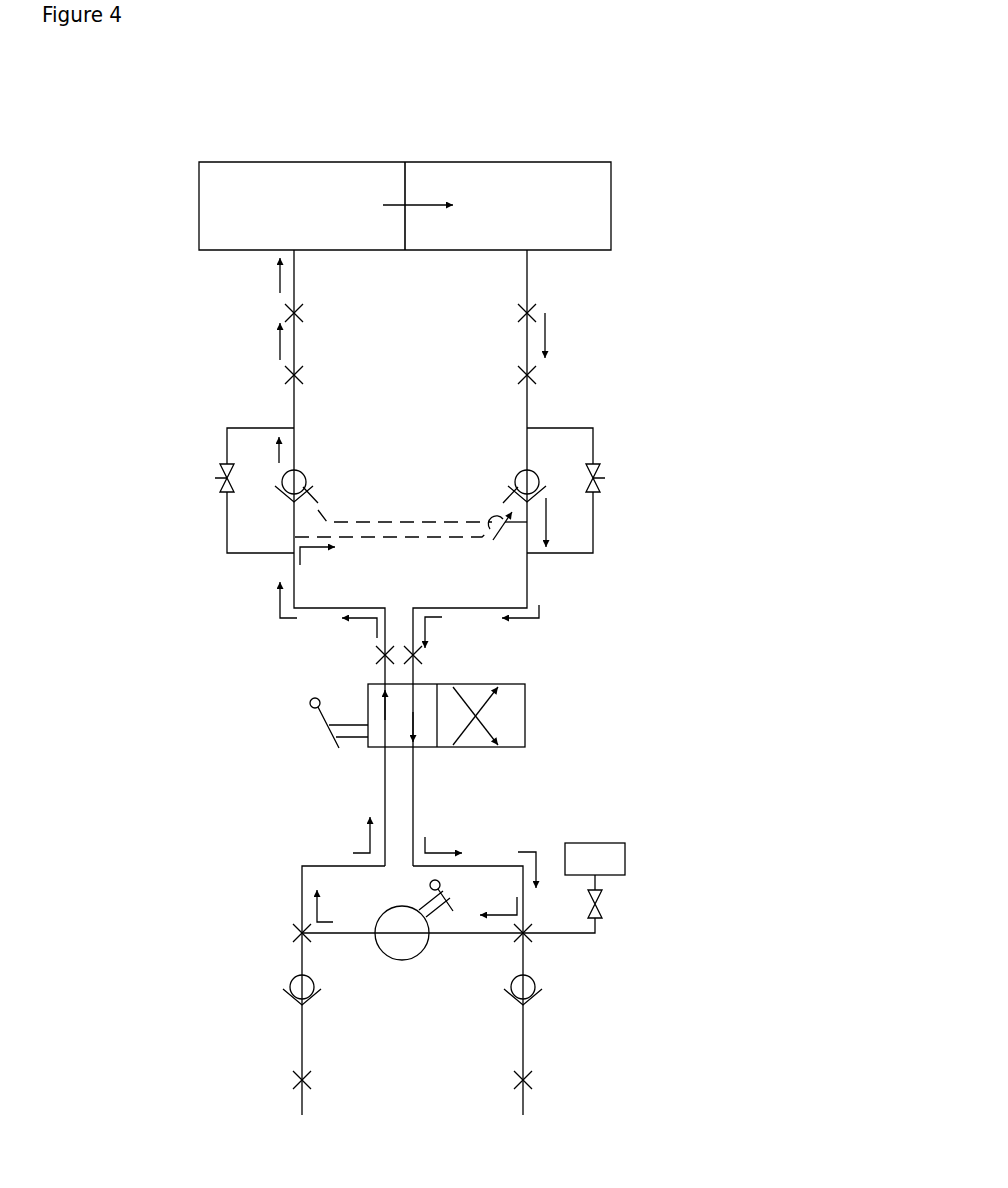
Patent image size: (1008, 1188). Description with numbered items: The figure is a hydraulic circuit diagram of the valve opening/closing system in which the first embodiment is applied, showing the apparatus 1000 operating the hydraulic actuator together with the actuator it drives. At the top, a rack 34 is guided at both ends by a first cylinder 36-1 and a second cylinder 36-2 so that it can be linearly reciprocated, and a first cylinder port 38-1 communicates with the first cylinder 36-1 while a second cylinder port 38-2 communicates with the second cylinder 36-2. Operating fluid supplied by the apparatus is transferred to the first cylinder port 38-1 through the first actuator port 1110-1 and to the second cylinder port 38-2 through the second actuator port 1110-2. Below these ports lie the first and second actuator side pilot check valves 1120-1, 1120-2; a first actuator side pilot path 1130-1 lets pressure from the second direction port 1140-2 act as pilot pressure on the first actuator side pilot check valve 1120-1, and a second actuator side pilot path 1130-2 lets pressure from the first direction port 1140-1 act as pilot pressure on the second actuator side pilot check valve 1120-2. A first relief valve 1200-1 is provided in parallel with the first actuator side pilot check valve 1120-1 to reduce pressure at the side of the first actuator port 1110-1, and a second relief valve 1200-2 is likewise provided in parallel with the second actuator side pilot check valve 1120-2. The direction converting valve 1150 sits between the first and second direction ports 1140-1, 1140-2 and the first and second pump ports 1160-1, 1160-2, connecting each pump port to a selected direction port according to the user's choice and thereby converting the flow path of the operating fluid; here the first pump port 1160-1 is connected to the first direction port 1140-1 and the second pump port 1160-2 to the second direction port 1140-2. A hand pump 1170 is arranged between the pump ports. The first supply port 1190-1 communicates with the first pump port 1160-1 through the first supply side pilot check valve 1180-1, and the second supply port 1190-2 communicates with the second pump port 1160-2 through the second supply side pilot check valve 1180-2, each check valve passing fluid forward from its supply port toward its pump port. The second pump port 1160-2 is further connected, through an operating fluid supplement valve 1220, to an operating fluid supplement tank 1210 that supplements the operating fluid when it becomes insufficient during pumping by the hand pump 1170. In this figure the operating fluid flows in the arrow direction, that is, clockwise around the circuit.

The apparatus operating the hydraulic actuator 1000 is at (516, 118).
The rack 34 is at (405, 190).
The first cylinder 36-1 is at (200, 205).
The second cylinder 36-2 is at (598, 205).
The first cylinder port 38-1 is at (283, 315).
The second cylinder port 38-2 is at (538, 315).
The first actuator port 1110-1 is at (283, 375).
The second actuator port 1110-2 is at (538, 378).
The first actuator side pilot check valve 1120-1 is at (283, 472).
The second actuator side pilot check valve 1120-2 is at (538, 472).
The first actuator side pilot path 1130-1 is at (290, 548).
The second actuator side pilot path 1130-2 is at (447, 540).
The first direction port 1140-1 is at (375, 656).
The second direction port 1140-2 is at (425, 655).
The direction converting valve 1150 is at (528, 715).
The first pump port 1160-1 is at (290, 940).
The second pump port 1160-2 is at (535, 940).
The hand pump 1170 is at (378, 910).
The first supply side pilot check valve 1180-1 is at (288, 1000).
The second supply side pilot check valve 1180-2 is at (537, 1000).
The first supply port 1190-1 is at (290, 1085).
The second supply port 1190-2 is at (535, 1085).
The first relief valve 1200-1 is at (217, 478).
The second relief valve 1200-2 is at (605, 478).
The operating fluid supplement tank 1210 is at (628, 855).
The operating fluid supplement valve 1220 is at (605, 905).